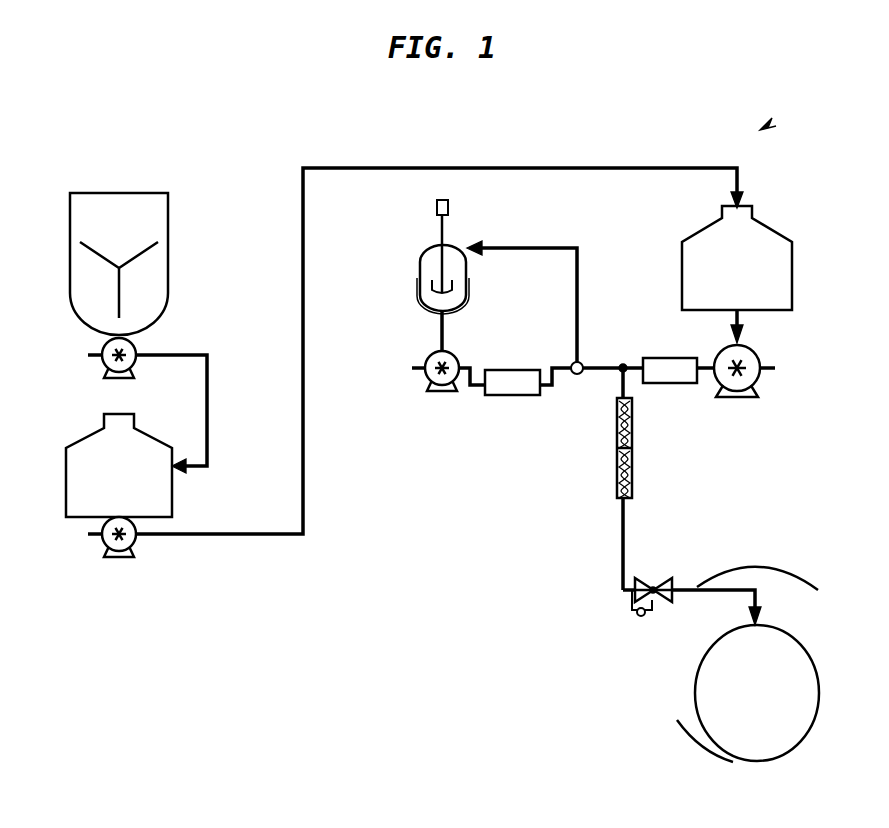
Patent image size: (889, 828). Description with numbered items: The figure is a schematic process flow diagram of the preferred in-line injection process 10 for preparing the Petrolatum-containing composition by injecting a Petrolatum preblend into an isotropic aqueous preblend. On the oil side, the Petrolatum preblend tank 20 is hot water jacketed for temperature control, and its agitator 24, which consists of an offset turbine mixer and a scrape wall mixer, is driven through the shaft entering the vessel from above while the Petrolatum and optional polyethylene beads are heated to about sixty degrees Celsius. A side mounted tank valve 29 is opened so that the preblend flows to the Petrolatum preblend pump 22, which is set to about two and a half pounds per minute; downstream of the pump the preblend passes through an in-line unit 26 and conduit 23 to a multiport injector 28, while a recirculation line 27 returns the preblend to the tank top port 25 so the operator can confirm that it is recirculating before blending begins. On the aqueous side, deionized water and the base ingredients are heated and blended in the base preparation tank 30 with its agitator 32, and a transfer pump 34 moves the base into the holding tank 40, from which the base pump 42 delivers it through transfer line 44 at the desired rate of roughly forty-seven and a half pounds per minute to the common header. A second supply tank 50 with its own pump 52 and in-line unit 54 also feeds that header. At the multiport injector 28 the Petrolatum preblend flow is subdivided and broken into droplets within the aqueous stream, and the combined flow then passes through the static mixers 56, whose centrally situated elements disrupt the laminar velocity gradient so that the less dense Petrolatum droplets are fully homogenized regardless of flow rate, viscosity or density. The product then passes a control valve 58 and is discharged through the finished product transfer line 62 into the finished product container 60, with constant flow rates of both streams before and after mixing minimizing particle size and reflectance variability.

The system 10 is at (768, 124).
The Petrolatum preblend tank 20 is at (420, 256).
The Petrolatum preblend pump 22 is at (426, 382).
The conduit 23 is at (552, 386).
The agitator 24 is at (437, 208).
The tank top port 25 is at (458, 244).
The filter 26 is at (510, 396).
The recirculation line 27 is at (553, 246).
The multiport injector 28 is at (583, 363).
The side mounted Petrolatum preblend tank valve 29 is at (440, 316).
The base preparation tank 30 is at (168, 217).
The agitator 32 is at (92, 258).
The pump 34 is at (105, 365).
The holding tank 40 is at (66, 483).
The base pump 42 is at (105, 545).
The transfer line 44 is at (303, 495).
The solvent tank 50 is at (792, 274).
The pump 52 is at (757, 385).
The filter 54 is at (668, 384).
The static mixers 56 is at (617, 450).
The valve 58 is at (630, 602).
The drum 60 is at (810, 662).
The finished product transfer line 62 is at (750, 590).